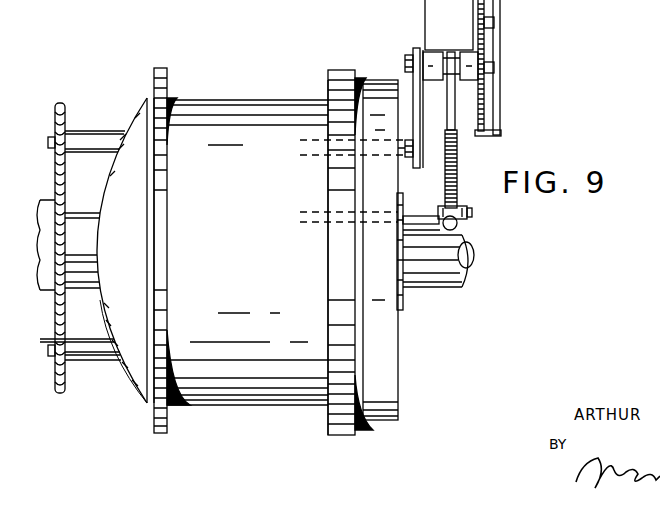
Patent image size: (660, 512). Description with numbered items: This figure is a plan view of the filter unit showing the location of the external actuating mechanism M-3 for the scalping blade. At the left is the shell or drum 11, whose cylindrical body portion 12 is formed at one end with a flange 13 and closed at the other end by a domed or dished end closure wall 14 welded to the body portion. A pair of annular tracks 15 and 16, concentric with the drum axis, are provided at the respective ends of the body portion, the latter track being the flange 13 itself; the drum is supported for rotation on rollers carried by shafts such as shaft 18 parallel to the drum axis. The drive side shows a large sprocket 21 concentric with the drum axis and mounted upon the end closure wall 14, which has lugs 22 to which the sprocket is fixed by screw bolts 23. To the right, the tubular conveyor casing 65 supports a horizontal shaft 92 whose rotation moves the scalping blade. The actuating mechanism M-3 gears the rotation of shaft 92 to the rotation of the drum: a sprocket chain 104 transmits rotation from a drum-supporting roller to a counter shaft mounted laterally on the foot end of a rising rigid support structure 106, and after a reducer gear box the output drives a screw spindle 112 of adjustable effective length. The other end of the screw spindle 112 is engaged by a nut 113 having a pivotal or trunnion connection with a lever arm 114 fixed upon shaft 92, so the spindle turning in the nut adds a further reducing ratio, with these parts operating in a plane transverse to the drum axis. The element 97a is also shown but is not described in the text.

The shell or drum 11 is at (233, 413).
The cylindrical body portion 12 is at (252, 199).
The flange 13 is at (328, 190).
The domed or dished end closure wall 14 is at (112, 171).
The annular track 15 is at (160, 68).
The annular track 16 is at (341, 70).
The shaft 18 is at (408, 152).
The large sprocket 21 is at (66, 118).
The lugs 22 is at (88, 131).
The screw bolts 23 is at (49, 146).
The tubular conveyor casing 65 is at (440, 284).
The horizontal shaft 92 is at (418, 215).
The shaft end 97a is at (454, 248).
The sprocket chain 104 is at (413, 90).
The rising rigid support structure 106 is at (462, 19).
The screw spindle 112 is at (457, 178).
The nut 113 is at (459, 207).
The lever arm 114 is at (472, 211).
The external actuating mechanism M-3 is at (518, 95).